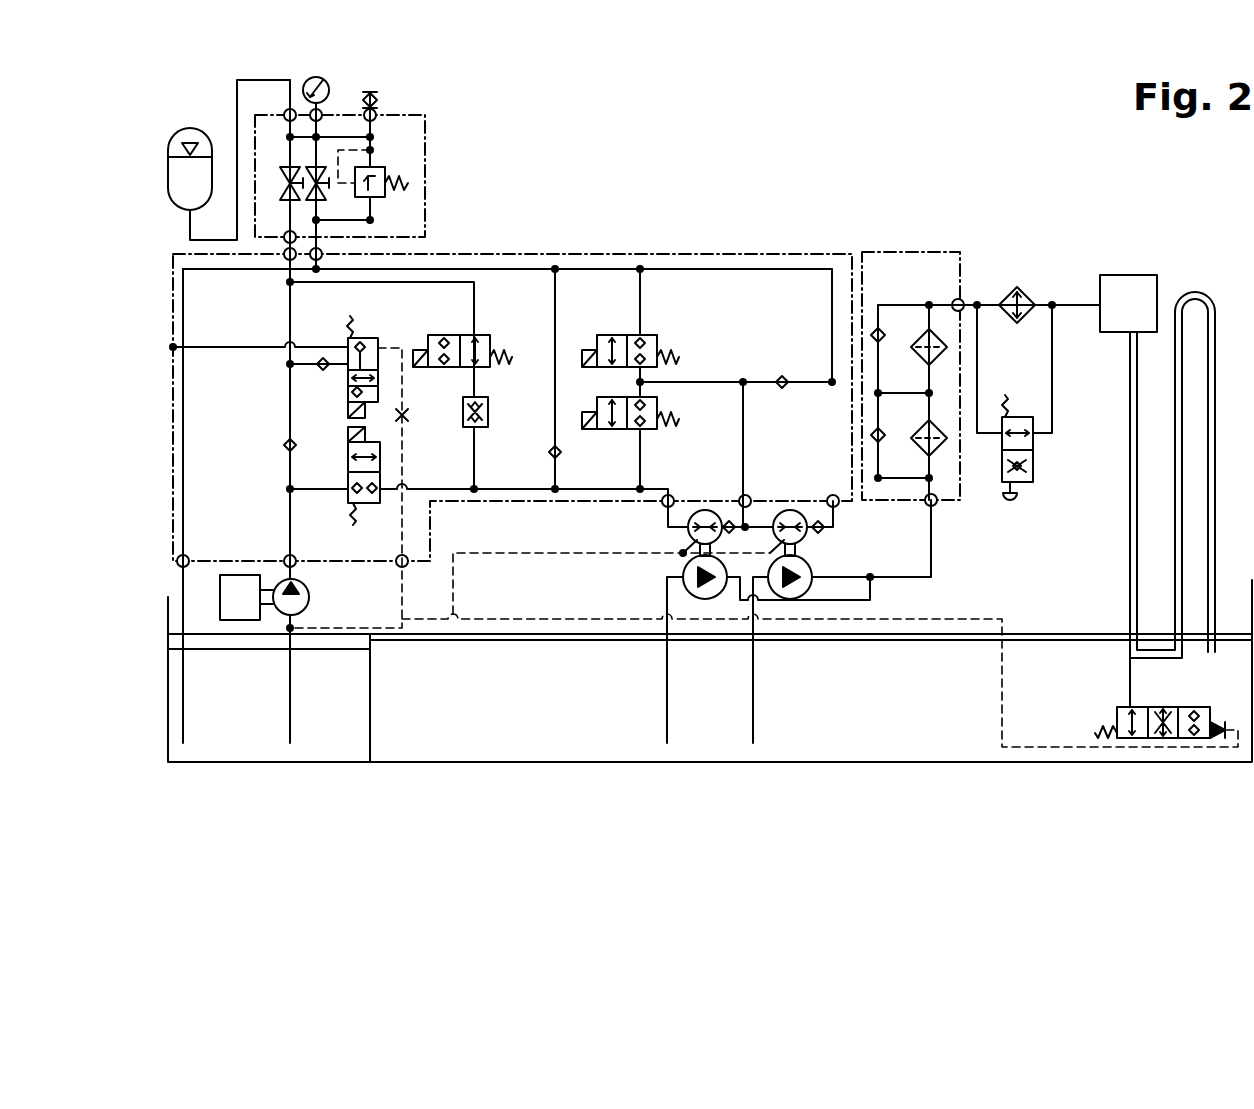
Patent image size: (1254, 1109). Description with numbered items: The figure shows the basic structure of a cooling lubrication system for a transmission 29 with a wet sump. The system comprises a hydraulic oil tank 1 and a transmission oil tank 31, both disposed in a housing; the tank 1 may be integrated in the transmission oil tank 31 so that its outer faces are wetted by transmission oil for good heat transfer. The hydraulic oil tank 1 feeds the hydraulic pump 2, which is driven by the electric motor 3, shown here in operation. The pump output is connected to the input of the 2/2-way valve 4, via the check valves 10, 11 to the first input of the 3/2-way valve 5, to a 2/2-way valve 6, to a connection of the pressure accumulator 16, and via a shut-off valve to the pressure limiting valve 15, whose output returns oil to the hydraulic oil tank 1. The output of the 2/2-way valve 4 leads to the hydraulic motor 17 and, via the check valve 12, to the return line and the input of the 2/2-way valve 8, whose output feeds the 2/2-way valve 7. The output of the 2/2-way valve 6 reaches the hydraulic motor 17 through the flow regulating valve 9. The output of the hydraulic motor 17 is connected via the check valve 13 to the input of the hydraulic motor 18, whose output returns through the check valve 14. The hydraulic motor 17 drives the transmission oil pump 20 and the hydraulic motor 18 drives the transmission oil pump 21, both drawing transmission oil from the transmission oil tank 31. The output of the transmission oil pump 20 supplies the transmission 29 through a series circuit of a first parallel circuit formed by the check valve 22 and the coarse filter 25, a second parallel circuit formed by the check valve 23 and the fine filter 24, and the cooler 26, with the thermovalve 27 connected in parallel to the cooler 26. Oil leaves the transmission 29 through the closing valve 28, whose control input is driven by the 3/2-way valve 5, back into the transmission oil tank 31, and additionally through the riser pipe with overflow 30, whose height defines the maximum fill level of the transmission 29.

The hydraulic oil tank 1 is at (243, 745).
The hydraulic pump 2 is at (310, 597).
The electric motor 3 is at (230, 580).
The 2/2-way valve 4 is at (348, 465).
The 3/2-way valve 5 is at (348, 385).
The 2/2-way valve 6 is at (492, 340).
The 2/2-way valve 7 is at (660, 340).
The 2/2-way valve 8 is at (660, 405).
The flow regulating valve 9 is at (490, 405).
The check valve 10 is at (283, 447).
The check valve 11 is at (323, 357).
The check valve 12 is at (548, 455).
The check valve 13 is at (731, 518).
The check valve 14 is at (818, 518).
The pressure limiting valve 15 is at (400, 150).
The pressure accumulator 16 is at (175, 183).
The hydraulic motor 17 is at (698, 508).
The hydraulic motor 18 is at (783, 508).
The transmission oil pump 20 is at (690, 565).
The transmission oil pump 21 is at (805, 560).
The check valve 22 is at (884, 442).
The check valve 23 is at (878, 328).
The fine filter 24 is at (927, 330).
The coarse filter 25 is at (935, 452).
The cooler 26 is at (1016, 290).
The thermovalve 27 is at (1035, 455).
The closing valve 28 is at (1115, 712).
The transmission 29 is at (1120, 278).
The riser pipe with overflow 30 is at (1193, 300).
The transmission oil tank 31 is at (443, 745).